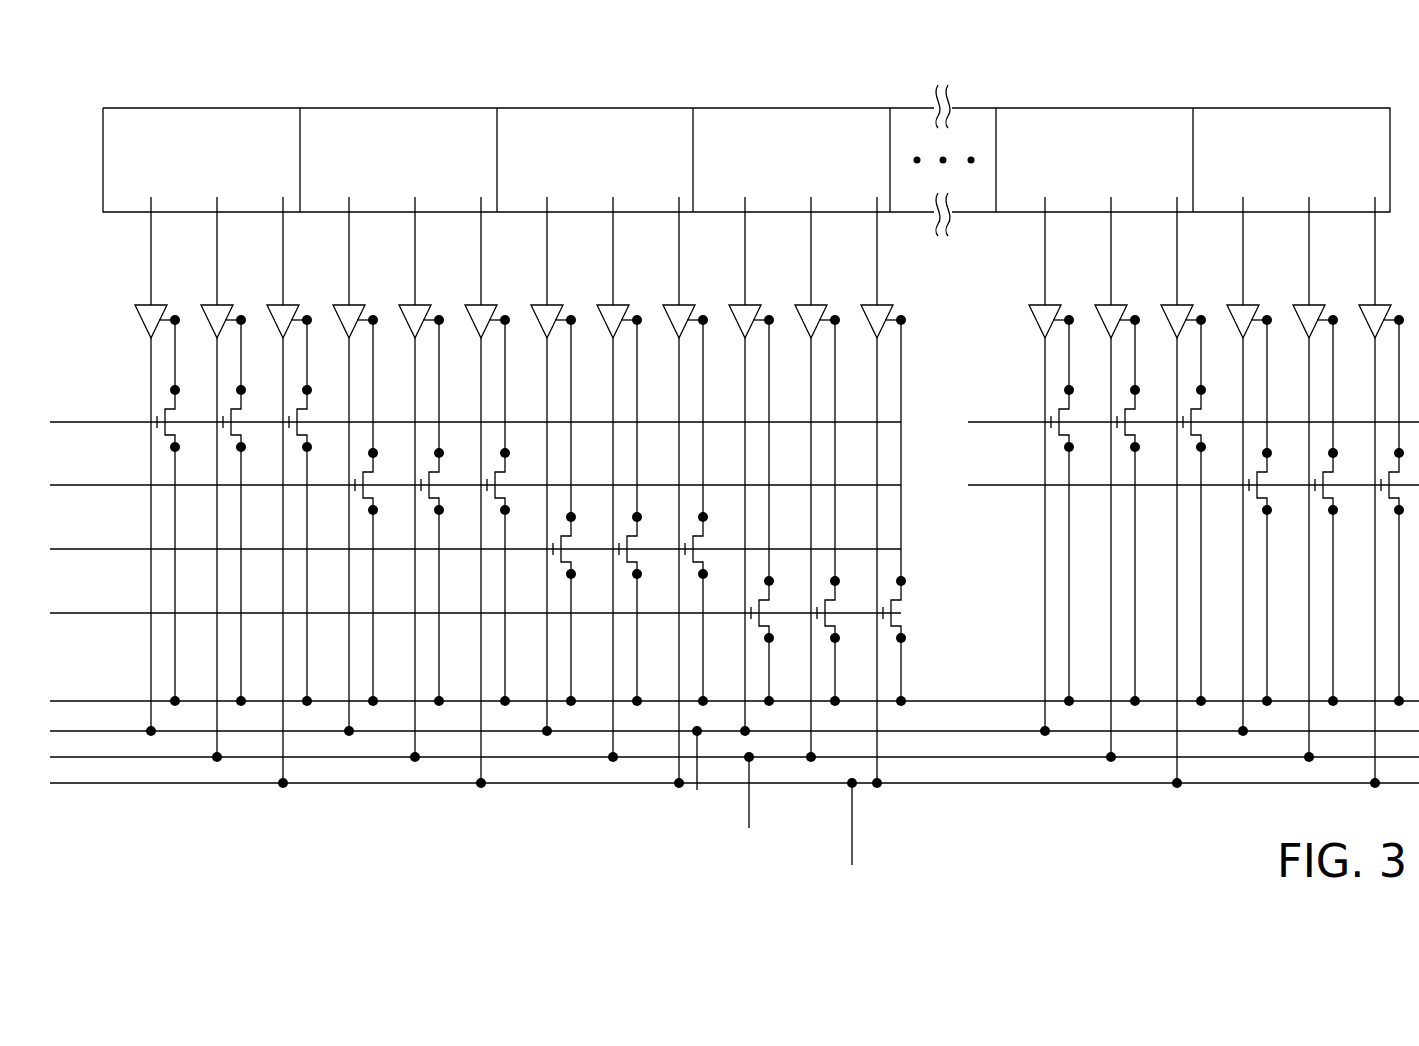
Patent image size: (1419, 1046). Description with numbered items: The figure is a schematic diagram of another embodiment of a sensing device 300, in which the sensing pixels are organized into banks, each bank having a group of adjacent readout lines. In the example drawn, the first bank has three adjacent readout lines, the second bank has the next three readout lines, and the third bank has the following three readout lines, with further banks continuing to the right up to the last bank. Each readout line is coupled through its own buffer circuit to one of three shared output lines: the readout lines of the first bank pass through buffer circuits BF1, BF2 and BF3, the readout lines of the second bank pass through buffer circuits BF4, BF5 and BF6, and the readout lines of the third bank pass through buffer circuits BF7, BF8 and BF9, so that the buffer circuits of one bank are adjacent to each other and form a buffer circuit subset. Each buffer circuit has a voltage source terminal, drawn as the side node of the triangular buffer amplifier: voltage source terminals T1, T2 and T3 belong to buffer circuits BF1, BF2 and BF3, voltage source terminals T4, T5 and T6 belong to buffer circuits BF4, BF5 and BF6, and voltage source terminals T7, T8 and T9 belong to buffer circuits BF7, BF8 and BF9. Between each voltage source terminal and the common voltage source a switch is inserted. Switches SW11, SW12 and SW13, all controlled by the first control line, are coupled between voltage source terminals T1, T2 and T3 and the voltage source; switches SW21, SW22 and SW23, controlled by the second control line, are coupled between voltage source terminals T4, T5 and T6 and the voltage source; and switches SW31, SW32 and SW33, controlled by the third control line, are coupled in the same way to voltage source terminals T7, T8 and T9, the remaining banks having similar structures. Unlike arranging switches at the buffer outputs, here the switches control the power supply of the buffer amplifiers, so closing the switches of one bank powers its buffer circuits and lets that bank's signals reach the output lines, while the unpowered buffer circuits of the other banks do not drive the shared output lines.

The sensing device 300 is at (112, 49).
The buffer circuit BF1 is at (167, 267).
The buffer circuit BF2 is at (233, 267).
The buffer circuit BF3 is at (299, 267).
The buffer circuit BF4 is at (365, 267).
The buffer circuit BF5 is at (431, 267).
The buffer circuit BF6 is at (497, 267).
The buffer circuit BF7 is at (563, 267).
The buffer circuit BF8 is at (629, 267).
The buffer circuit BF9 is at (695, 267).
The voltage source terminal T1 is at (176, 324).
The voltage source terminal T2 is at (242, 324).
The voltage source terminal T3 is at (308, 324).
The voltage source terminal T4 is at (374, 324).
The voltage source terminal T5 is at (440, 324).
The voltage source terminal T6 is at (506, 324).
The voltage source terminal T7 is at (572, 324).
The voltage source terminal T8 is at (638, 324).
The voltage source terminal T9 is at (704, 324).
The switch SW11 is at (173, 417).
The switch SW12 is at (239, 417).
The switch SW13 is at (305, 417).
The switch SW21 is at (382, 513).
The switch SW22 is at (448, 513).
The switch SW23 is at (514, 513).
The switch SW31 is at (580, 513).
The switch SW32 is at (646, 513).
The switch SW33 is at (712, 513).